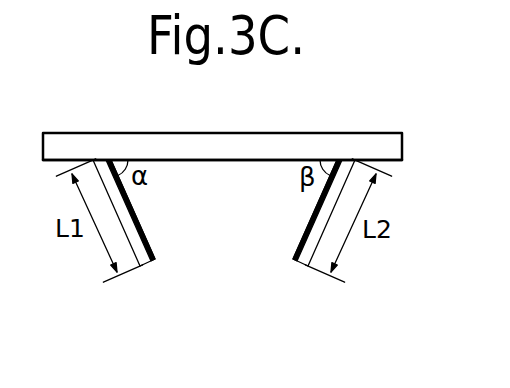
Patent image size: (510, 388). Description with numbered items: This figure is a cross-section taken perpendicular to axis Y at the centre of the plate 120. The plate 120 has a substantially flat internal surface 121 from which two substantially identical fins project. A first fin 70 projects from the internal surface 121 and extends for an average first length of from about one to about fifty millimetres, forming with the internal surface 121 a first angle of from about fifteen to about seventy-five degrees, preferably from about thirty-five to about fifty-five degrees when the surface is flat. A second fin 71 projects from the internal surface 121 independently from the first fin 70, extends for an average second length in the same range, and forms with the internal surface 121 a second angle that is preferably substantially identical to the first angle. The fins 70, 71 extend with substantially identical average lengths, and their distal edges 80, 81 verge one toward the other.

The plate 120 is at (334, 130).
The internal surface 121 is at (213, 160).
The first fin 70 is at (148, 233).
The second fin 71 is at (299, 233).
The distal edge 80 is at (146, 269).
The distal edge 81 is at (298, 269).